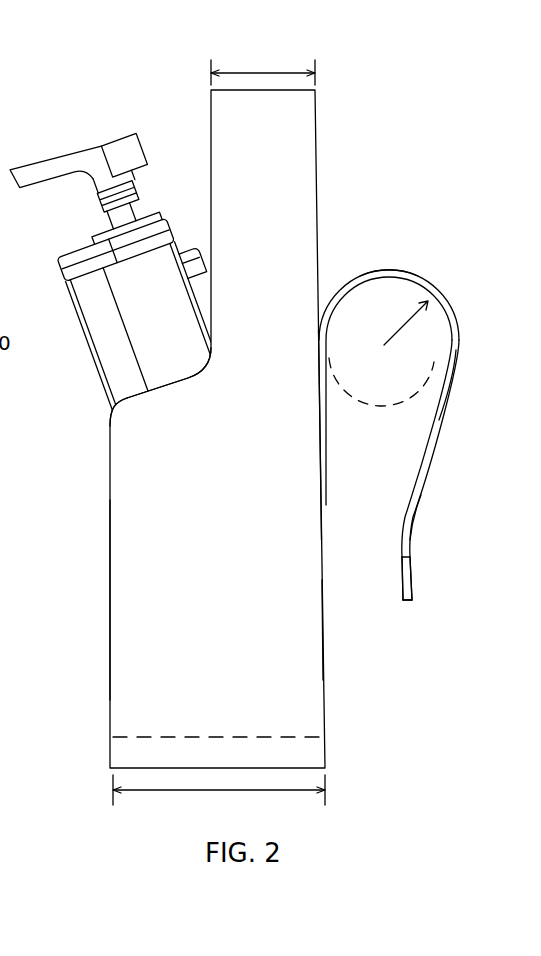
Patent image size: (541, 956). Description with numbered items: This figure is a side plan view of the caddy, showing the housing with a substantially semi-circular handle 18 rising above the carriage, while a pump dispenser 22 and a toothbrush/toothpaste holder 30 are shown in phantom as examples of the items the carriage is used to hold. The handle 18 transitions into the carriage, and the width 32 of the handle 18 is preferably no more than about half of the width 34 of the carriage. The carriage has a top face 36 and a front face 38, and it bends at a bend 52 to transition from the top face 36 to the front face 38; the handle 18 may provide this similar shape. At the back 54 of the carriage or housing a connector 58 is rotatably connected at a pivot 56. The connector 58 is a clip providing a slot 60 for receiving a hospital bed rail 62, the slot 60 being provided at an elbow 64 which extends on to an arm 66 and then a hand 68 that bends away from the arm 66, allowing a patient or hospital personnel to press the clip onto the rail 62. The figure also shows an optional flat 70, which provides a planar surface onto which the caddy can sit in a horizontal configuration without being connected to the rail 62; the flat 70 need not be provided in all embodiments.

The handle 18 is at (315, 128).
The pump dispenser 22 is at (132, 222).
The toothbrush/toothpaste holder 30 is at (90, 302).
The width of the handle 32 is at (263, 56).
The width of the carriage 34 is at (219, 797).
The top face 36 is at (102, 393).
The front face 38 is at (102, 571).
The bend 52 is at (112, 410).
The back 54 is at (347, 634).
The pivot 56 is at (322, 440).
The connector 58 is at (398, 275).
The slot 60 is at (417, 415).
The hospital bed rail 62 is at (422, 354).
The elbow 64 is at (368, 272).
The arm 66 is at (417, 517).
The hook tip 68 is at (412, 582).
The flat 70 is at (302, 740).